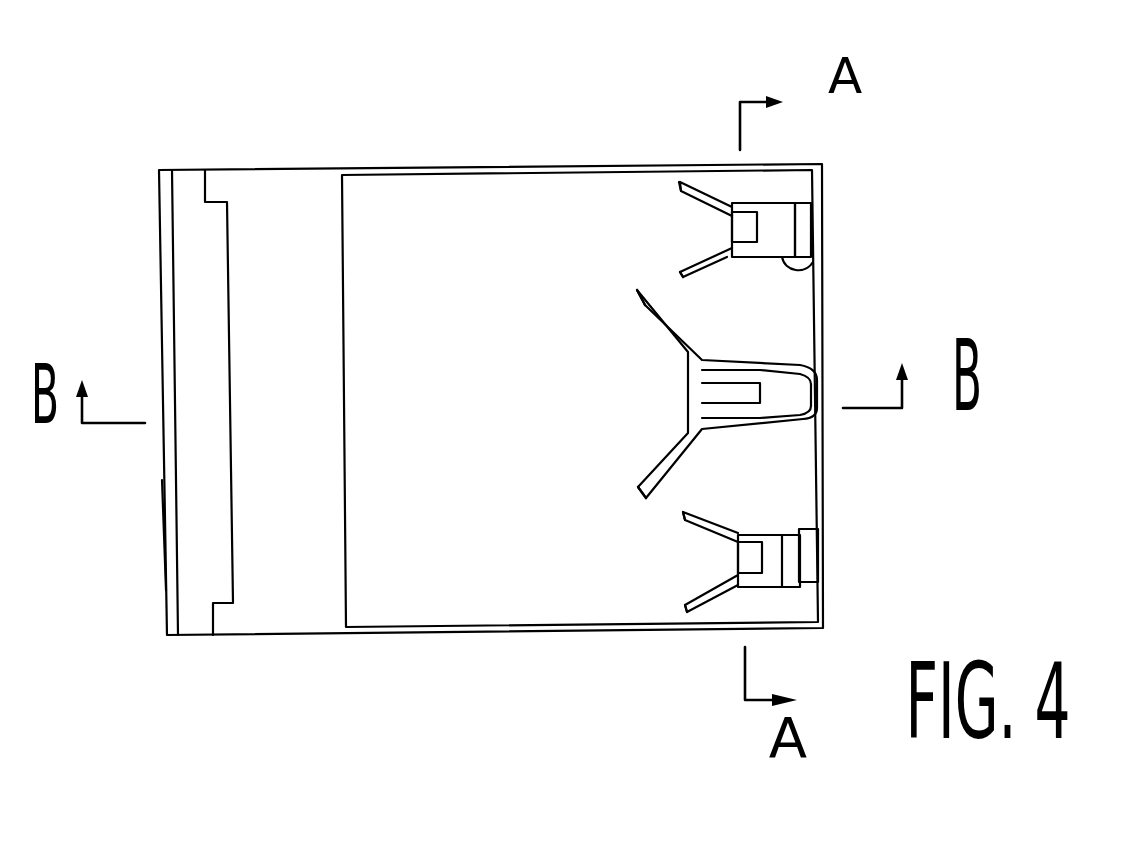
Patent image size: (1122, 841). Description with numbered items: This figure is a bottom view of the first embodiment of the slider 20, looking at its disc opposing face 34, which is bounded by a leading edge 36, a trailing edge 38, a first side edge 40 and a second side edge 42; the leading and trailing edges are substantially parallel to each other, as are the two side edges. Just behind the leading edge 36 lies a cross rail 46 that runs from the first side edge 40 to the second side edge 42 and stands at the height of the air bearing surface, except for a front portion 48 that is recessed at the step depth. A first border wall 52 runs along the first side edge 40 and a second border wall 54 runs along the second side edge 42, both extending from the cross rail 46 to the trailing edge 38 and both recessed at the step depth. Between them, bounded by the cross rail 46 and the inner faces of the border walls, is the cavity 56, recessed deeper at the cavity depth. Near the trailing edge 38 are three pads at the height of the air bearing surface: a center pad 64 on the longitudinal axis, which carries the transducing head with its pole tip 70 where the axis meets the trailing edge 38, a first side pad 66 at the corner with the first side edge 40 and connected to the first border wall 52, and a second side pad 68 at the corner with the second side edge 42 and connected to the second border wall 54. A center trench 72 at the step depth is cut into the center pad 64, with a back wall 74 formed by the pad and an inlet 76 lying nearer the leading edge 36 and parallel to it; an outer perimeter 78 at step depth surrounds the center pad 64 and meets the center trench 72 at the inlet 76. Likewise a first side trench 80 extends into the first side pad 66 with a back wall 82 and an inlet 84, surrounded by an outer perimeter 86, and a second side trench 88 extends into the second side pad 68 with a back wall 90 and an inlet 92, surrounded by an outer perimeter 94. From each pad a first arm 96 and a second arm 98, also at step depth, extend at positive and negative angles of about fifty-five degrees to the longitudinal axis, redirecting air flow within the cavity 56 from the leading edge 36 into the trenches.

The slider 20 is at (300, 95).
The disc opposing face 34 is at (253, 200).
The leading edge 36 is at (158, 325).
The trailing edge 38 is at (820, 285).
The first side edge 40 is at (538, 167).
The second side edge 42 is at (573, 632).
The cross rail 46 is at (343, 643).
The front portion 48 is at (190, 534).
The first border wall 52 is at (407, 168).
The second border wall 54 is at (452, 628).
The cavity 56 is at (388, 608).
The center pad 64 is at (748, 394).
The first side pad 66 is at (778, 200).
The second side pad 68 is at (783, 541).
The pole tip 70 is at (815, 388).
The center trench 72 is at (748, 388).
The back wall 74 is at (760, 384).
The inlet 76 is at (715, 395).
The outer perimeter 78 is at (738, 430).
The first side trench 80 is at (743, 217).
The back wall 82 is at (782, 222).
The inlet 84 is at (733, 227).
The outer perimeter 86 is at (820, 267).
The second side trench 88 is at (773, 553).
The back wall 90 is at (762, 568).
The inlet 92 is at (753, 552).
The outer perimeter 94 is at (763, 530).
The first arm 96 is at (680, 187).
The second arm 98 is at (683, 270).